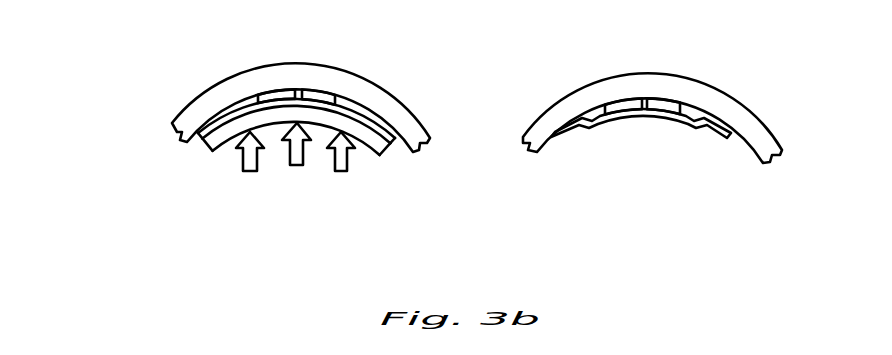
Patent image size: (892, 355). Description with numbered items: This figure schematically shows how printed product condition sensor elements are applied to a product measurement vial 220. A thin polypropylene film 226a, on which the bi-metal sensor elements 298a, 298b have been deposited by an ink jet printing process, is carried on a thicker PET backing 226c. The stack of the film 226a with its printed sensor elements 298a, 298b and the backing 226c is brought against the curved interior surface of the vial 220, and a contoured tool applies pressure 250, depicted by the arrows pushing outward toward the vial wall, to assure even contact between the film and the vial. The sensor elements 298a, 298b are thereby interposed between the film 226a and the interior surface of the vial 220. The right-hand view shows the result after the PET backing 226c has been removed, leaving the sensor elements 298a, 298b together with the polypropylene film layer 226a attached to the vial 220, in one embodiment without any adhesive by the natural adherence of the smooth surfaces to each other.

The vial 220 is at (236, 87).
The polypropylene film 226a is at (209, 125).
The PET backing 226c is at (198, 152).
The sensor element 298a is at (280, 89).
The sensor element 298b is at (316, 89).
The pressure 250 is at (297, 168).